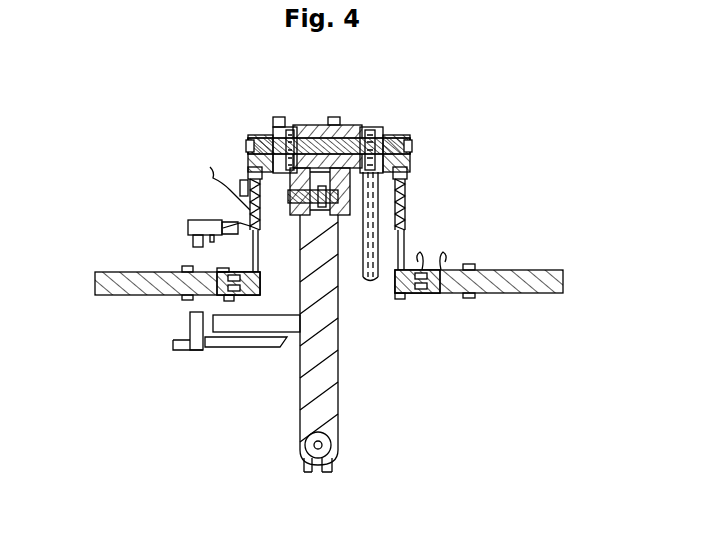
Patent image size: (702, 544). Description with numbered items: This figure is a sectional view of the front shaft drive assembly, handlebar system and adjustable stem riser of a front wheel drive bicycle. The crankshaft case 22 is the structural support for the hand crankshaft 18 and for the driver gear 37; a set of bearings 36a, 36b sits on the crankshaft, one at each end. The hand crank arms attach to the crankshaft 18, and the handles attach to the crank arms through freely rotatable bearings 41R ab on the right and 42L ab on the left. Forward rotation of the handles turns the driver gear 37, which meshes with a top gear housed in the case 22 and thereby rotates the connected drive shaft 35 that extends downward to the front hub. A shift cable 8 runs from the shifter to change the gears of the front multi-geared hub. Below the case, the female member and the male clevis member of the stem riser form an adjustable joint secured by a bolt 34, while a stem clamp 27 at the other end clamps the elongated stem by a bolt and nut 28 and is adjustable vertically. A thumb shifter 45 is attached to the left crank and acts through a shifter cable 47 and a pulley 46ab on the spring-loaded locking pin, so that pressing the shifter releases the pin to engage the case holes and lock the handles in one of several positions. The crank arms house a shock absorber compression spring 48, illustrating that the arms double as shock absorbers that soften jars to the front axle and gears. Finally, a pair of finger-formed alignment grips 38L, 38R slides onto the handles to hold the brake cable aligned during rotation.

The shift cable 8 is at (240, 348).
The hand crankshaft 18 is at (312, 140).
The crankshaft case 22 is at (350, 127).
The stem clamp 27 is at (300, 462).
The bolt and nut 28 is at (340, 462).
The bolt 34 is at (325, 445).
The drive shaft 35 is at (372, 280).
The crankshaft bearing 36a is at (388, 132).
The crankshaft bearing 36b is at (285, 125).
The driver gear 37 is at (362, 125).
The left alignment grip 38L is at (160, 290).
The right alignment grip 38R is at (515, 292).
The freely rotatable bearings 41R ab is at (452, 251).
The freely rotatable bearings 42L ab is at (233, 272).
The thumb shifter 45 is at (196, 218).
The pulley 46ab is at (245, 195).
The shifter cable 47 is at (228, 235).
The shock absorber compression spring 48 is at (408, 210).